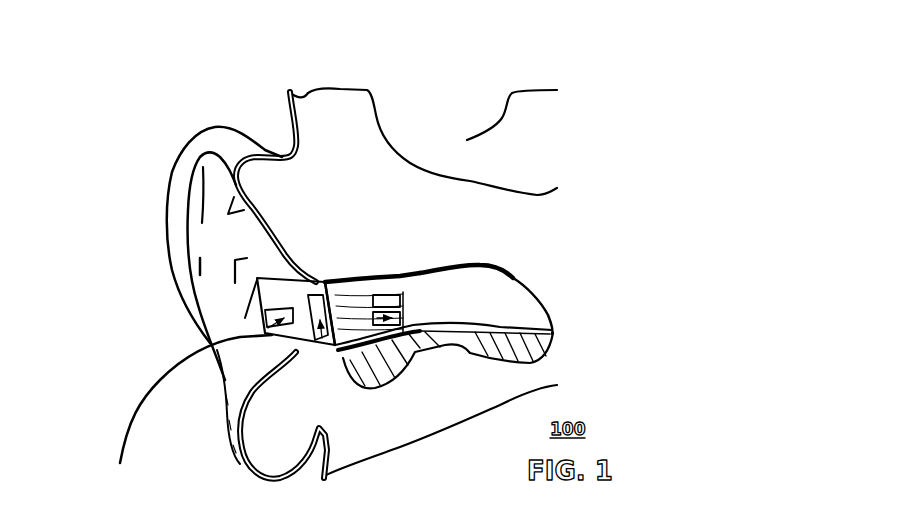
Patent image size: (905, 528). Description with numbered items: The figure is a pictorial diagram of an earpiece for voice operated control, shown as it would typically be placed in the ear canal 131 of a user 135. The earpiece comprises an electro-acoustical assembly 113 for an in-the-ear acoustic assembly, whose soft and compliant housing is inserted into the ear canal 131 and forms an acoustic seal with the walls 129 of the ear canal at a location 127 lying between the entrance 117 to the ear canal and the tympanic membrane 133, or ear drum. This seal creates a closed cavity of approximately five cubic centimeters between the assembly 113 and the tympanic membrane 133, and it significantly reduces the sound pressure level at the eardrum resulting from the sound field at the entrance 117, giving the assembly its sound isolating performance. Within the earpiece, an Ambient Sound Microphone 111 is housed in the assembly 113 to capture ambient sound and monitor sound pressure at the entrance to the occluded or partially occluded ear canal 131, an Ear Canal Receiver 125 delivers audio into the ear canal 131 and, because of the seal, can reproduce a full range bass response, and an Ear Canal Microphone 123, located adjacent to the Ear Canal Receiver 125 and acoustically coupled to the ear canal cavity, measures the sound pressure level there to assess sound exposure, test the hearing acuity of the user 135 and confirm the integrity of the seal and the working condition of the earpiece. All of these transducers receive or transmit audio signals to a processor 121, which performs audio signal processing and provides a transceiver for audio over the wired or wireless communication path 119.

The Ambient Sound Microphone (ASM) 111 is at (293, 358).
The electro-acoustical assembly 113 is at (267, 277).
The entrance to the ear canal 117 is at (156, 169).
The wired or wireless communication path 119 is at (140, 398).
The processor 121 is at (325, 367).
The Ear Canal Microphone (ECM) 123 is at (448, 360).
The Ear Canal Receiver (ECR) 125 is at (386, 299).
The location 127 is at (345, 271).
The walls of the ear canal 129 is at (424, 268).
The ear canal 131 is at (443, 316).
The tympanic membrane 133 is at (532, 278).
The user 135 is at (527, 101).